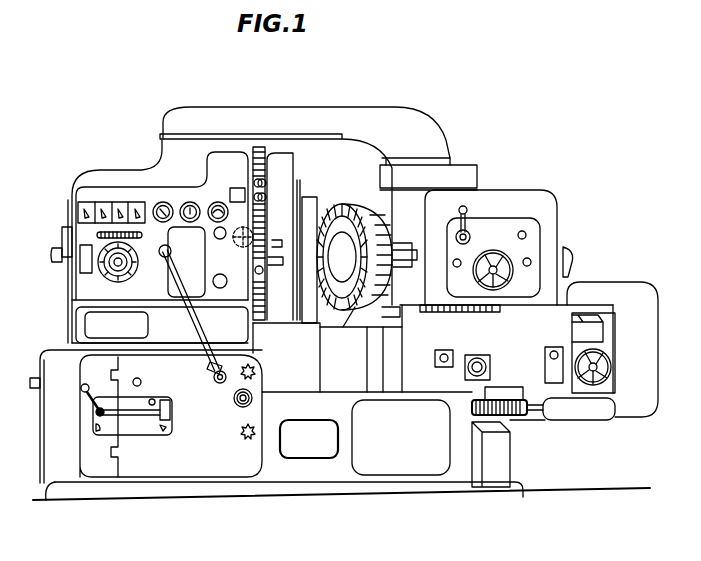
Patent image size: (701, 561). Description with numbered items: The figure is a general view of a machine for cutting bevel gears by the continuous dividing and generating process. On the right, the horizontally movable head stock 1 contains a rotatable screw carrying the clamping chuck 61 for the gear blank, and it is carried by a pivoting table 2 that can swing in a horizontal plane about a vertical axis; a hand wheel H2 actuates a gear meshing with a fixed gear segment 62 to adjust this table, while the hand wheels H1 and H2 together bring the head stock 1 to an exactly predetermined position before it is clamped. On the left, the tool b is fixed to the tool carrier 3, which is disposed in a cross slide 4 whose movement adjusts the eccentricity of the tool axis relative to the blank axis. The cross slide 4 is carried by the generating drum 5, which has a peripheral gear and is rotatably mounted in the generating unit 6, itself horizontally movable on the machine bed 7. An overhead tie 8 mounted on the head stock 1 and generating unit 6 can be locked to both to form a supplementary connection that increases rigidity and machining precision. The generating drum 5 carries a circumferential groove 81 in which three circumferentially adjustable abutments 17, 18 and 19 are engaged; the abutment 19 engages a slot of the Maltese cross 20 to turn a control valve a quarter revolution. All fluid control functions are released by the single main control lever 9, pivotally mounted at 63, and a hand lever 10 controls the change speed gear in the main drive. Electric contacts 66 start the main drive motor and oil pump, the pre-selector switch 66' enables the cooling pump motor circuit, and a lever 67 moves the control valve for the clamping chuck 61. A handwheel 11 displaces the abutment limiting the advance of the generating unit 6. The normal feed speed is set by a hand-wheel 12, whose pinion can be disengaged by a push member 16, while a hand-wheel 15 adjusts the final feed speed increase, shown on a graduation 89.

The head stock 1 is at (514, 194).
The pivoting table 2 is at (566, 307).
The tool carrier 3 is at (310, 217).
The cross slide 4 is at (265, 271).
The generating drum 5 is at (267, 157).
The generating unit 6 is at (192, 147).
The machine bed 7 is at (303, 472).
The overhead tie 8 is at (241, 107).
The main control lever 9 is at (191, 320).
The hand lever 10 is at (84, 396).
The handwheel 11 is at (235, 401).
The hand-wheel 12 is at (112, 272).
The hand-wheel 15 is at (61, 253).
The push member 16 is at (138, 278).
The abutment 17 is at (264, 180).
The abutment 18 is at (264, 196).
The abutment 19 is at (265, 278).
The Maltese cross 20 is at (236, 248).
The clamping chuck 61 is at (385, 236).
The fixed gear segment 62 is at (513, 413).
The pivot of main control lever 63 is at (192, 320).
The electric contacts 66 is at (129, 187).
The pre-selector switch 66' is at (107, 176).
The lever 67 is at (469, 211).
The circumferential groove 81 is at (262, 150).
The graduation 89 is at (131, 237).
The hand wheel H1 is at (488, 259).
The hand wheel H2 is at (612, 367).
The tool b is at (319, 214).